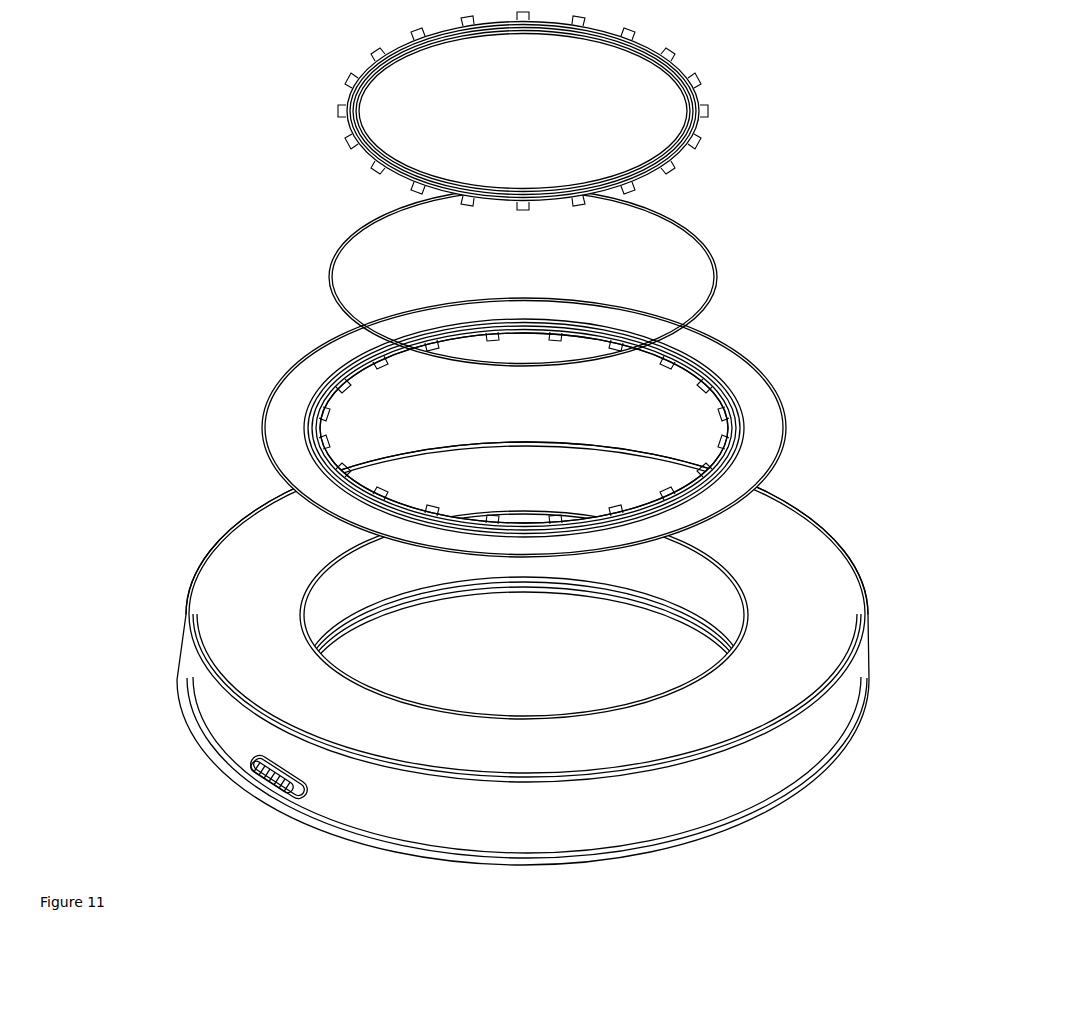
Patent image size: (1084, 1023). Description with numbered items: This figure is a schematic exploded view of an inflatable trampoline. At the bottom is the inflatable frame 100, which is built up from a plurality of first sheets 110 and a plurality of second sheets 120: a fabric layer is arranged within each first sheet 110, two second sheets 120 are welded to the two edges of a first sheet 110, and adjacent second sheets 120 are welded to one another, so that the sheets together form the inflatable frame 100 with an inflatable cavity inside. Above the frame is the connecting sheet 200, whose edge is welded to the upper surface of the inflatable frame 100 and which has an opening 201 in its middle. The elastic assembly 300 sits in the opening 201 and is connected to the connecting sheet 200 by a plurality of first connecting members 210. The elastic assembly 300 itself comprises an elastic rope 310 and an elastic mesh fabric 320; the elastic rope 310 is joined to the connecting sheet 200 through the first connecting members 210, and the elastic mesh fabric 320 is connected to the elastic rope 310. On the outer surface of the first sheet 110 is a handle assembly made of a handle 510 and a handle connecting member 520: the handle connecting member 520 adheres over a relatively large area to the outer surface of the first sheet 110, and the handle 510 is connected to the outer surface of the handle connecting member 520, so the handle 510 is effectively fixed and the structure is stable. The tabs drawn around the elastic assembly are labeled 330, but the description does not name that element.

The inflatable frame 100 is at (223, 520).
The first sheet 110 is at (778, 518).
The second sheet 120 is at (187, 606).
The connecting sheet 200 is at (326, 365).
The opening 201 is at (353, 432).
The first connecting member 210 is at (703, 383).
The elastic assembly 300 is at (532, 189).
The elastic rope 310 is at (673, 213).
The elastic mesh fabric 320 is at (577, 109).
The coil winding with tabs 330 is at (346, 137).
The handle 510 is at (258, 795).
The handle connecting member 520 is at (257, 757).